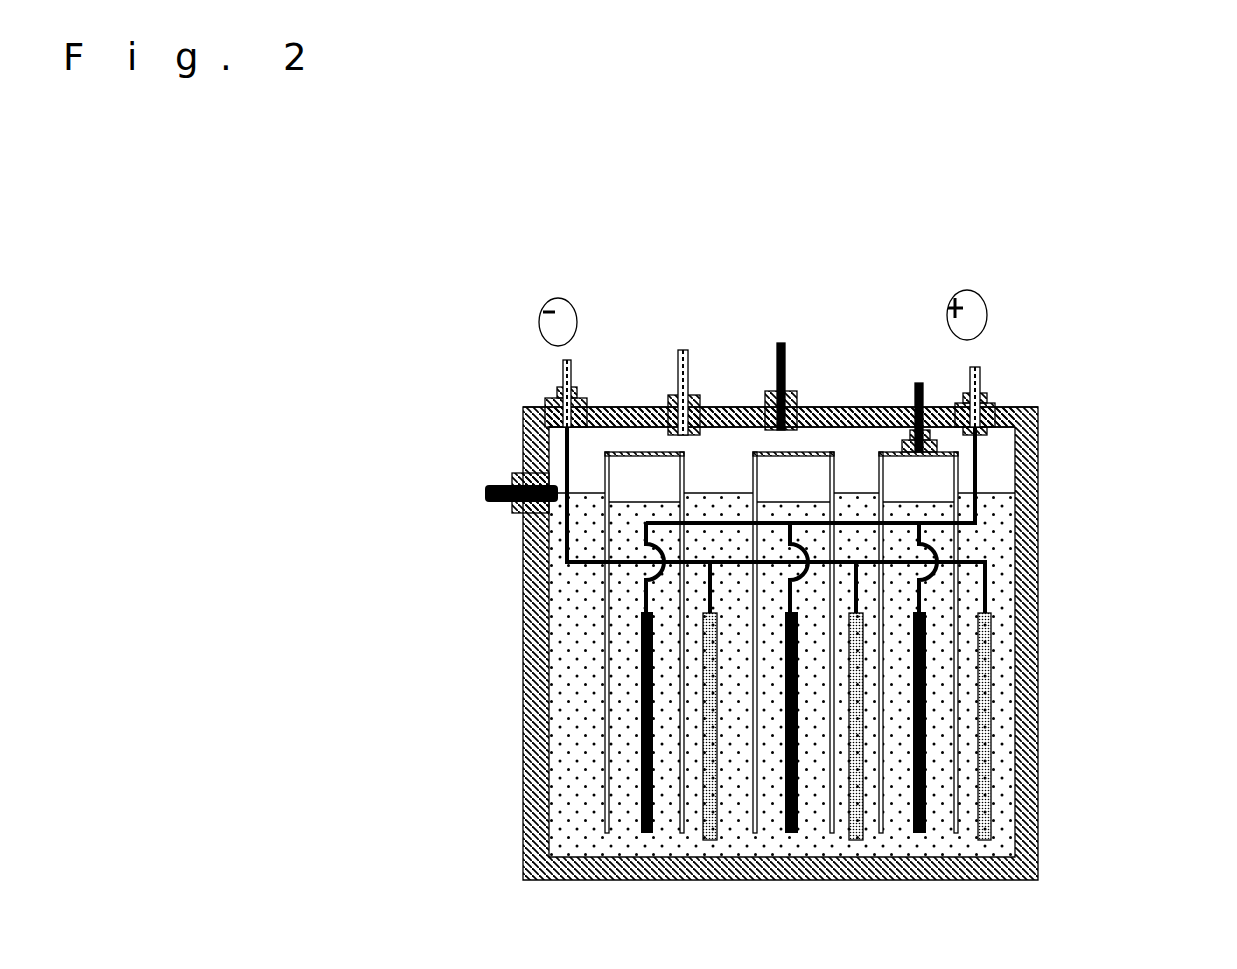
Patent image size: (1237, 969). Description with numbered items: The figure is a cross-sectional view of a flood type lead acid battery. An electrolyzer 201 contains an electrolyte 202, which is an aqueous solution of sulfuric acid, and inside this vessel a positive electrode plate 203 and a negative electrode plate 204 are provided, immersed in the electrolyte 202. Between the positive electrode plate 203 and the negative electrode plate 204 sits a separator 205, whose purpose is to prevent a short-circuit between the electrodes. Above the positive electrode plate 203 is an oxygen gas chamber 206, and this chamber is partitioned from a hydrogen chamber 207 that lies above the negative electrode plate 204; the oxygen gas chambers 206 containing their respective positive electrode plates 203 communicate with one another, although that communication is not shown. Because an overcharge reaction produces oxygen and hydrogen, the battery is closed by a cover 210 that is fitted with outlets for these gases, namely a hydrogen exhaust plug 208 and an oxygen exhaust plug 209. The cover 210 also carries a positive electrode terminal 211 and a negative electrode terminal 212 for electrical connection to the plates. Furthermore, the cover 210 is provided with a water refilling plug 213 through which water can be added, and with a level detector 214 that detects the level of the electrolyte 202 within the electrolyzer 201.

The electrolyzer 201 is at (1037, 562).
The electrolyte 202 is at (1002, 642).
The positive electrode plate 203 is at (640, 652).
The negative electrode plate 204 is at (987, 713).
The separator 205 is at (605, 728).
The oxygen gas chamber 206 is at (622, 485).
The hydrogen chamber 207 is at (1008, 462).
The hydrogen exhaust plug 208 is at (668, 365).
The oxygen exhaust plug 209 is at (908, 392).
The cover 210 is at (1035, 403).
The positive electrode terminal 211 is at (980, 370).
The negative electrode terminal 212 is at (560, 382).
The water refilling plug 213 is at (773, 365).
The level detector 214 is at (483, 493).